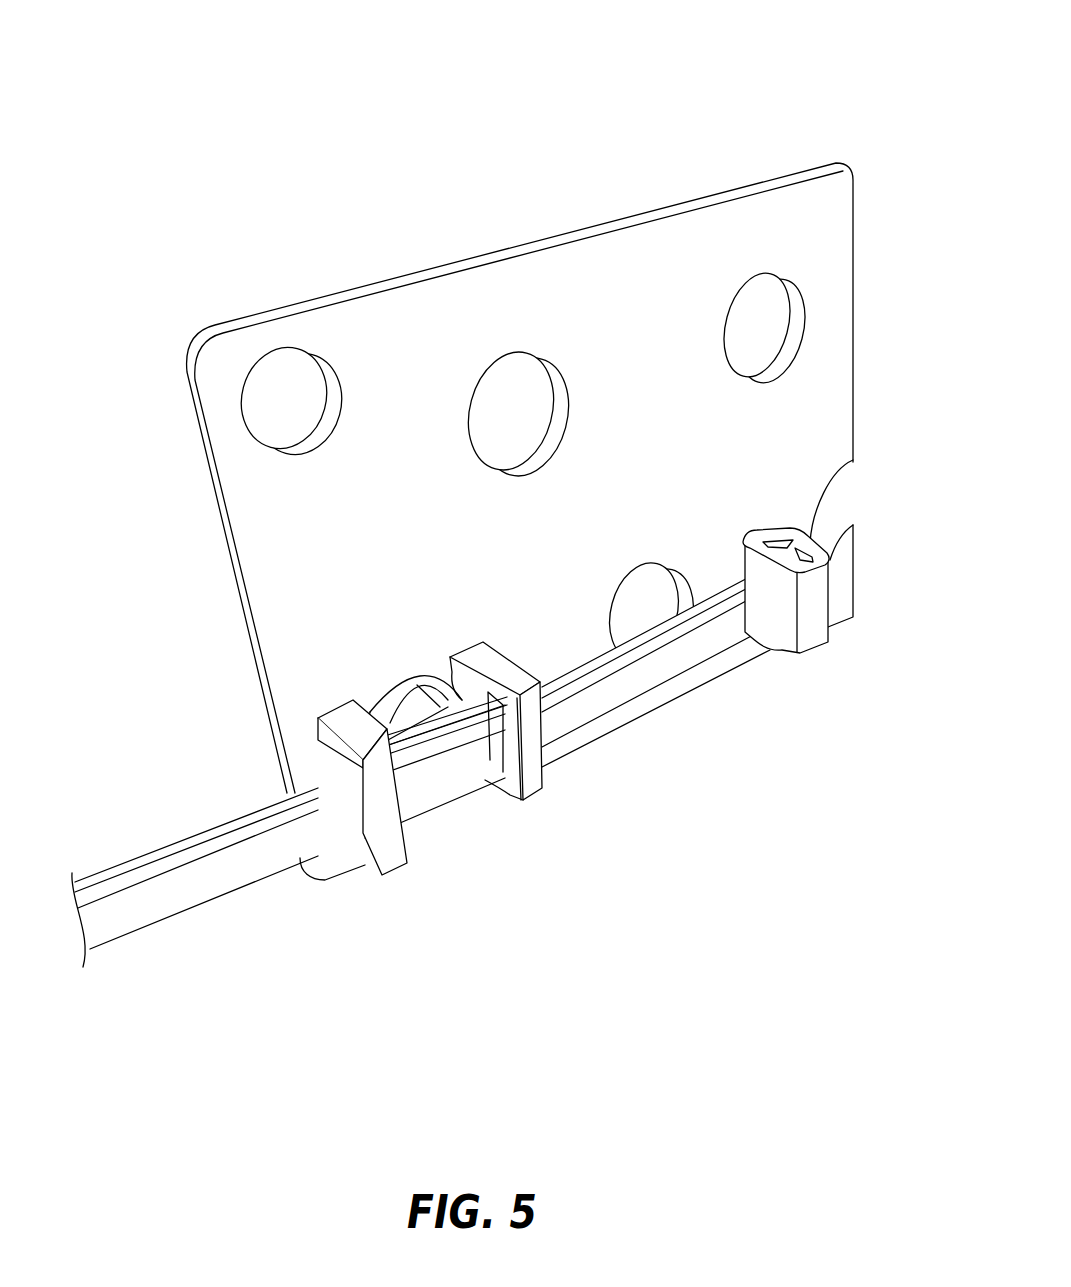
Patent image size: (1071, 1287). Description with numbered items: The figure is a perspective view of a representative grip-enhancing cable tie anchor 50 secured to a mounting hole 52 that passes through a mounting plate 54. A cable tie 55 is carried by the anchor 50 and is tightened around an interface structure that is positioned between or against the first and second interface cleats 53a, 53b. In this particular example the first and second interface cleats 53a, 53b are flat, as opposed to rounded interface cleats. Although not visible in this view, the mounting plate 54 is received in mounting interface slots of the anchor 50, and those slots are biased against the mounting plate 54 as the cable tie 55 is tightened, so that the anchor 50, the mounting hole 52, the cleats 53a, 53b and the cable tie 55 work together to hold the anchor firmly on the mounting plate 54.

The mounting plate 54 is at (695, 137).
The mounting hole 52 is at (403, 653).
The first interface cleat 53a is at (400, 888).
The second interface cleat 53b is at (558, 808).
The grip-enhancing cable tie anchor 50 is at (503, 790).
The cable tie 55 is at (150, 950).